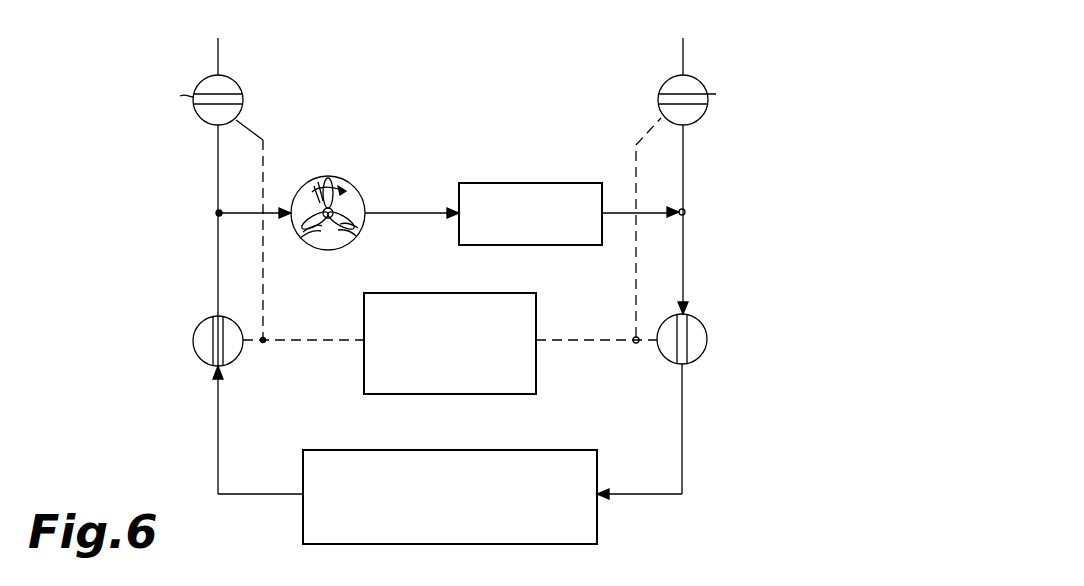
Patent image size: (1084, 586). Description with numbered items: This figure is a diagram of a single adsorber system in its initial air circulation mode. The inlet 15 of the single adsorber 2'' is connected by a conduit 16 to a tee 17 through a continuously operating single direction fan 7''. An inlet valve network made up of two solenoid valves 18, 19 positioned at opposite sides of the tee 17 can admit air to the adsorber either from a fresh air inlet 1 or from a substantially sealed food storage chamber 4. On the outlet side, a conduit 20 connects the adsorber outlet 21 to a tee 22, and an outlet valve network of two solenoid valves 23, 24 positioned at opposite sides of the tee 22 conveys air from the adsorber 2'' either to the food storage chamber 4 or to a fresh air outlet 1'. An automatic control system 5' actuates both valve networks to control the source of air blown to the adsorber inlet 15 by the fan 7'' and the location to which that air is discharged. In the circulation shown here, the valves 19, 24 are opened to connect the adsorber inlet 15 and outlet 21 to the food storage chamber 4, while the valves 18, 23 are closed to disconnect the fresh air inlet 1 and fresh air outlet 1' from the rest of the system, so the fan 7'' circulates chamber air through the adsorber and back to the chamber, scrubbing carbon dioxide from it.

The fresh air inlet 1 is at (223, 44).
The fresh air outlet 1' is at (689, 44).
The solenoid valve 18 is at (203, 119).
The tee 17 is at (216, 213).
The conduit 16 is at (236, 211).
The continuously operating single direction fan 7'' is at (344, 198).
The adsorber inlet 15 is at (459, 204).
The single adsorber 2'' is at (530, 191).
The conduit 20 is at (610, 207).
The adsorber outlet 21 is at (605, 221).
The tee 22 is at (686, 212).
The solenoid valve 23 is at (700, 119).
The solenoid valve 24 is at (697, 359).
The solenoid valve 19 is at (200, 361).
The automatic control system 5' is at (448, 256).
The food storage chamber 4 is at (485, 450).